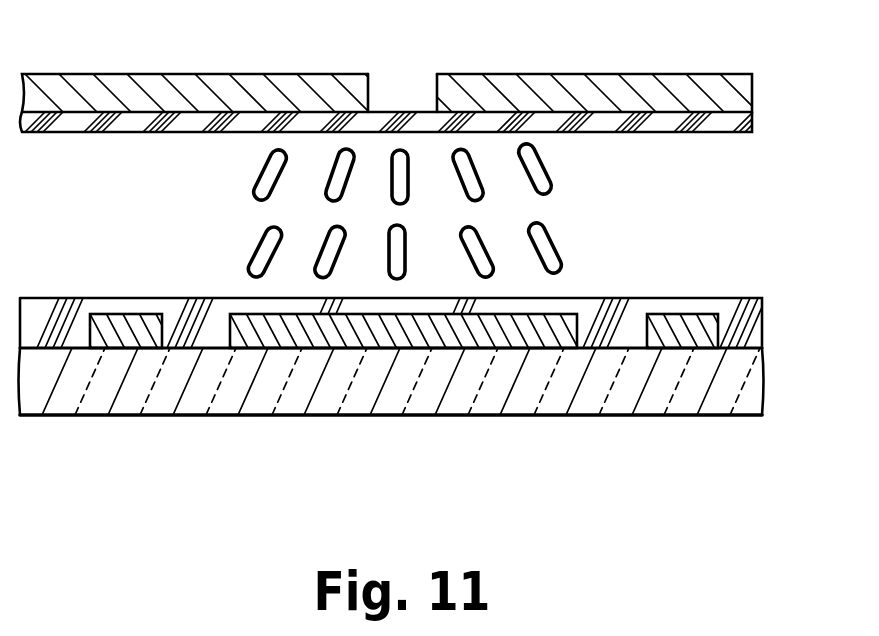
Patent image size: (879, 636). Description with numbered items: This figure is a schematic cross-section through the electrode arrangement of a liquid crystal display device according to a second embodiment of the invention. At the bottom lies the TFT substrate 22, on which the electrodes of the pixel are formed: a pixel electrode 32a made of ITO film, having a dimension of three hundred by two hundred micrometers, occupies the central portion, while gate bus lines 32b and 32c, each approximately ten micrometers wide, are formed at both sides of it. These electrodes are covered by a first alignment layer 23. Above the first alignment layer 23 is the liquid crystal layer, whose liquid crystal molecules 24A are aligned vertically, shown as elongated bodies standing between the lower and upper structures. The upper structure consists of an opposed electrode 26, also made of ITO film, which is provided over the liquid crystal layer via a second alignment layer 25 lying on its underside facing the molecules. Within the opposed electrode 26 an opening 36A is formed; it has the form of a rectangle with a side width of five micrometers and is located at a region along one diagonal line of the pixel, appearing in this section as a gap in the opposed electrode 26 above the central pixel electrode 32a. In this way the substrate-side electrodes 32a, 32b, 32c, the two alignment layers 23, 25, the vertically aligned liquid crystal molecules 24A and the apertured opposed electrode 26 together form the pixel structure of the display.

The TFT substrate 22 is at (766, 383).
The first alignment layer 23 is at (764, 304).
The liquid crystal molecules 24A is at (548, 168).
The second alignment layer 25 is at (755, 123).
The opposed electrode 26 is at (755, 81).
The pixel electrode 32a is at (570, 298).
The gate bus line 32b is at (110, 320).
The gate bus line 32c is at (680, 318).
The opening 36A is at (360, 73).